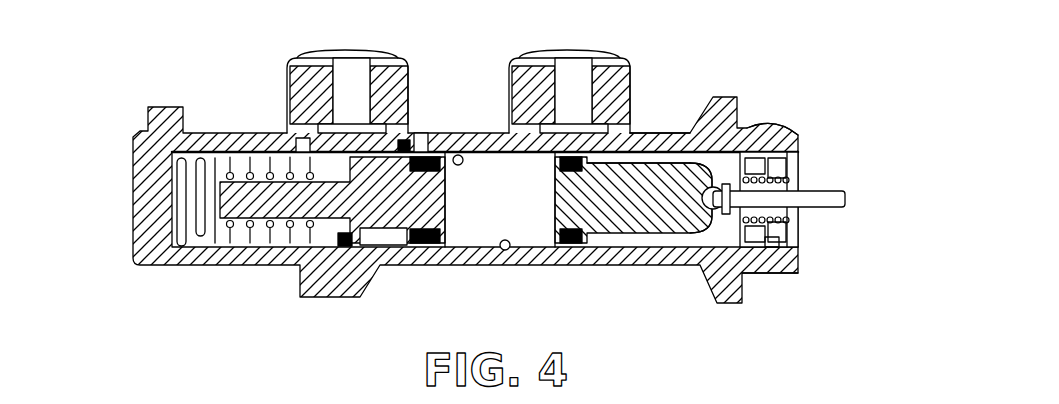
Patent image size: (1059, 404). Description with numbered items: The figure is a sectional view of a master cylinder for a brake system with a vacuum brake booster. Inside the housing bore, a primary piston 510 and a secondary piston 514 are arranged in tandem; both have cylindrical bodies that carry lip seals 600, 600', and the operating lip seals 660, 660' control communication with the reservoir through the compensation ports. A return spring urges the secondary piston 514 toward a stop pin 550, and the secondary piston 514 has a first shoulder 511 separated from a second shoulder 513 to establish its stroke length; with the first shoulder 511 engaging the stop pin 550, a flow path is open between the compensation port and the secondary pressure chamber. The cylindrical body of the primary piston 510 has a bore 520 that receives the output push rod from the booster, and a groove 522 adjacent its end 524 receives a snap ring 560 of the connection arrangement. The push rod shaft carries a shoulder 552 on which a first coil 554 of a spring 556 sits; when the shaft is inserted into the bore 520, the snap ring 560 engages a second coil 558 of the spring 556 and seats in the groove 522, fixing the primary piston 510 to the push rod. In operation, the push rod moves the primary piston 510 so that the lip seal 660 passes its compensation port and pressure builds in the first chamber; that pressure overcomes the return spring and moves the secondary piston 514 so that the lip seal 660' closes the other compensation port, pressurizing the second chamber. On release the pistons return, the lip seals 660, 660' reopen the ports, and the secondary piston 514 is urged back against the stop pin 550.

The primary piston 510 is at (678, 183).
The first shoulder 511 is at (345, 245).
The second shoulder 513 is at (421, 135).
The secondary piston 514 is at (273, 200).
The bore 520 is at (692, 238).
The groove 522 is at (805, 248).
The end 524 is at (797, 222).
The stop pin 550 is at (405, 145).
The shoulder 552 is at (720, 225).
The first coil 554 is at (757, 157).
The spring 556 is at (800, 157).
The second coil 558 is at (773, 252).
The snap ring 560 is at (800, 183).
The lip seal 600 is at (790, 119).
The lip seal 660 is at (586, 245).
The lip seal 660' is at (342, 283).